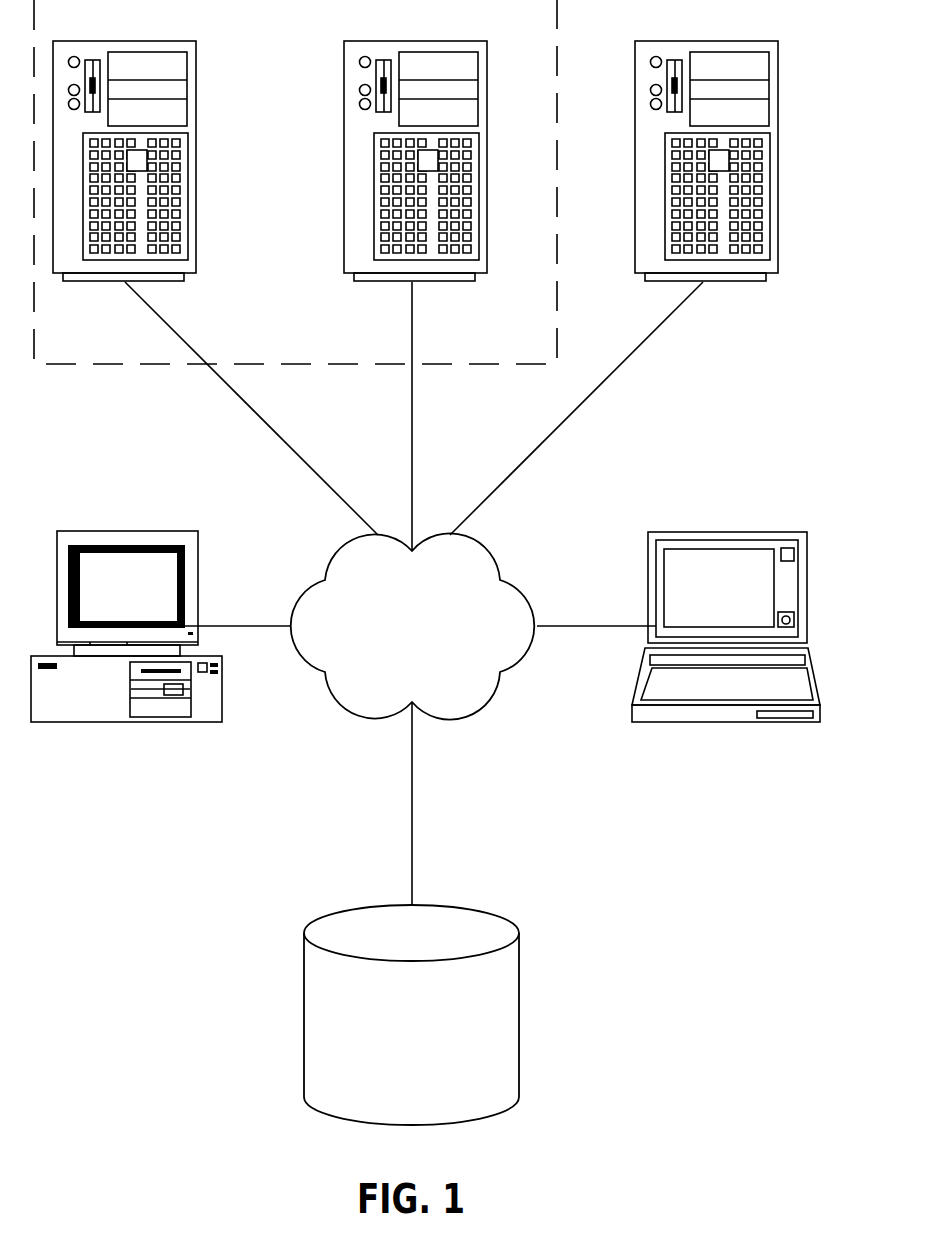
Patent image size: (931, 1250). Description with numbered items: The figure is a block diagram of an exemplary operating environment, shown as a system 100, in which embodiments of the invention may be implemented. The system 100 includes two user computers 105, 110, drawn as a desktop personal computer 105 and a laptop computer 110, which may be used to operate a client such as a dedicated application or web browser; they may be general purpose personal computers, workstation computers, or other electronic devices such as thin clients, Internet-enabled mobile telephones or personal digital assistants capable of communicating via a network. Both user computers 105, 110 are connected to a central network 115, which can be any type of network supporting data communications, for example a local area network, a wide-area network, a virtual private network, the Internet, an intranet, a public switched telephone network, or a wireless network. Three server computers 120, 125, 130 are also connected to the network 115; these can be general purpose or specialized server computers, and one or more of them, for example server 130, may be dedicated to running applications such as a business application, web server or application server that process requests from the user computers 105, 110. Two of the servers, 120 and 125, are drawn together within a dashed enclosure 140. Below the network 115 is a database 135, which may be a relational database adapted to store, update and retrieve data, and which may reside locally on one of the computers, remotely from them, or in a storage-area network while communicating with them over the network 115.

The system 100 is at (226, 858).
The user computer 105 is at (205, 723).
The user computer 110 is at (770, 723).
The network 115 is at (485, 702).
The server computer 120 is at (172, 282).
The server computer 125 is at (463, 282).
The server computer 130 is at (755, 282).
The database 135 is at (483, 1117).
The server group 140 is at (56, 366).